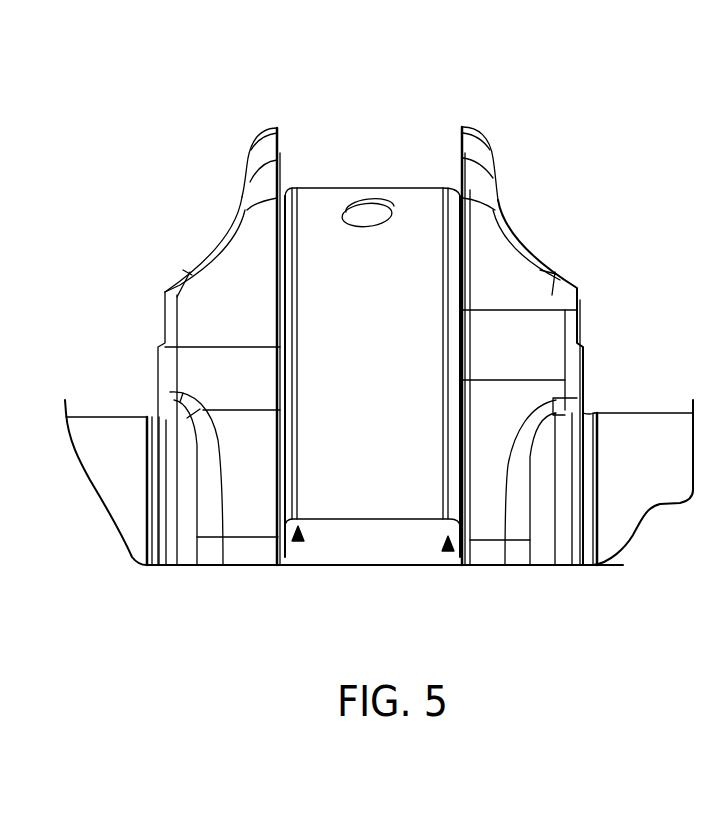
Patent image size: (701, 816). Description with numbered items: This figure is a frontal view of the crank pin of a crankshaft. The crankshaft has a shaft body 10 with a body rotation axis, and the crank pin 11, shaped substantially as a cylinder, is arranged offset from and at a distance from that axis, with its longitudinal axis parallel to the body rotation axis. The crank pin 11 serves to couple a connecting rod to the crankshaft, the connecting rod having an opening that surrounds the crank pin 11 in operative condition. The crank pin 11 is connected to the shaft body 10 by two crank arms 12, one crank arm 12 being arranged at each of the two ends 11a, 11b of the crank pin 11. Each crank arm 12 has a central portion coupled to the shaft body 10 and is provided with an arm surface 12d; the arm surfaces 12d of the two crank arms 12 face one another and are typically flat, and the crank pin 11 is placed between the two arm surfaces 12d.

The shaft body 10 is at (103, 440).
The crank pin 11 is at (403, 217).
The first end of the crank pin 11a is at (298, 540).
The second end of the crank pin 11b is at (448, 550).
The crank arm 12 is at (223, 278).
The arm surface 12d is at (282, 134).